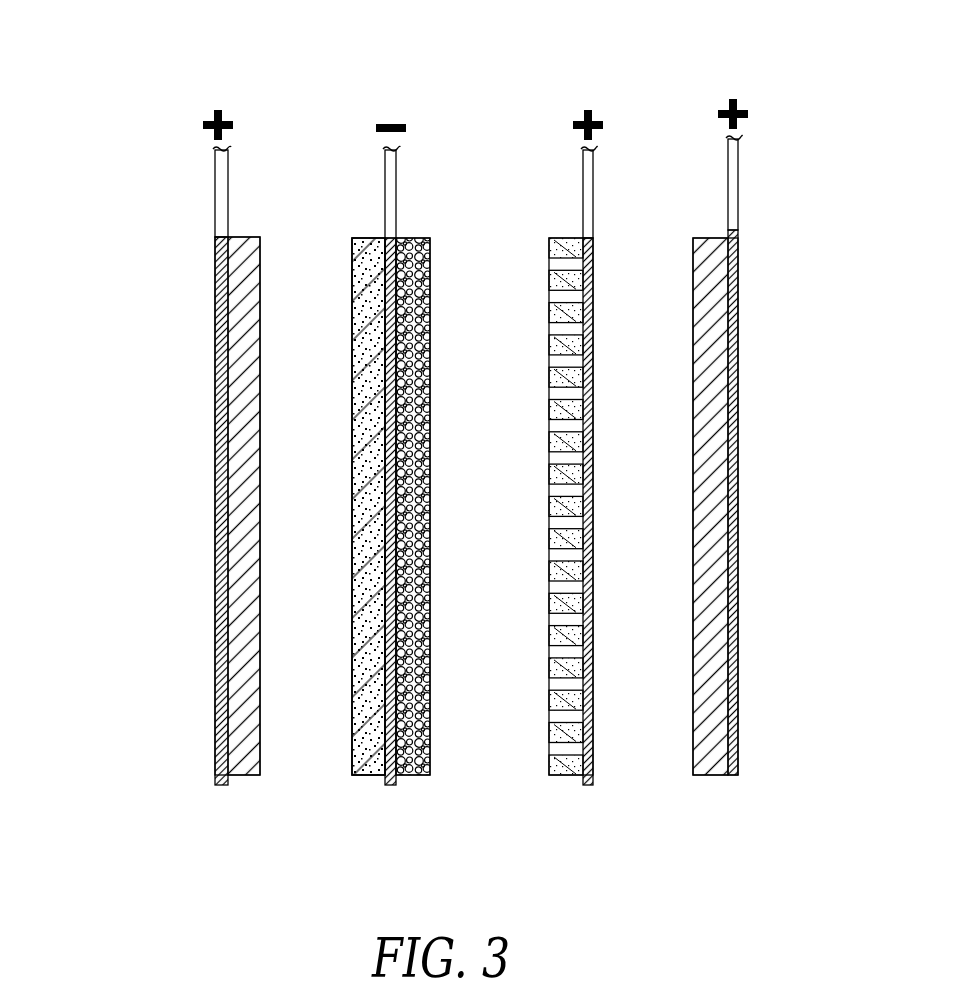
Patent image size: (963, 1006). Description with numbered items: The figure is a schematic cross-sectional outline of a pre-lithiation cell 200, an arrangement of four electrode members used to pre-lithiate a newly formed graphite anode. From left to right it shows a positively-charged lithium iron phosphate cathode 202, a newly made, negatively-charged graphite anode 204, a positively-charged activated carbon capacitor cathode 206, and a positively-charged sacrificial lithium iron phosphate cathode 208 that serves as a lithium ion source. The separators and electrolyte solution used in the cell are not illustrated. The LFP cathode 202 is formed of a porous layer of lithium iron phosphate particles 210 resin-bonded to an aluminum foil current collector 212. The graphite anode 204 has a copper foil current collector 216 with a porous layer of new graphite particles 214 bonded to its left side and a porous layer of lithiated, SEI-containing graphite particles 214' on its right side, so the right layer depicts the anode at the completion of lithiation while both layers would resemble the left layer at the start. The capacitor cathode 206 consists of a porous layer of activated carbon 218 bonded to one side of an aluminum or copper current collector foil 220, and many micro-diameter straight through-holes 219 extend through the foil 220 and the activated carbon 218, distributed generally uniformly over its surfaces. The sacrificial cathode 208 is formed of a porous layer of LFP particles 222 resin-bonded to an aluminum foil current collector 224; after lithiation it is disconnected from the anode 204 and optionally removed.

The pre-lithiation cell 200 is at (150, 82).
The lithium iron phosphate cathode 202 is at (209, 489).
The graphite anode 204 is at (387, 498).
The activated carbon capacitor cathode 206 is at (564, 489).
The sacrificial lithium iron phosphate cathode 208 is at (720, 484).
The lithium iron phosphate particles 210 is at (243, 366).
The aluminum foil current collector 212 is at (218, 208).
The graphite particles 214 is at (326, 486).
The lithiated graphite particles 214' is at (463, 494).
The copper foil current collector 216 is at (392, 208).
The activated carbon layer 218 is at (557, 473).
The through-holes 219 is at (560, 427).
The current collector foil 220 is at (590, 205).
The LFP particles 222 is at (705, 368).
The positive current collector tab 224 is at (733, 200).